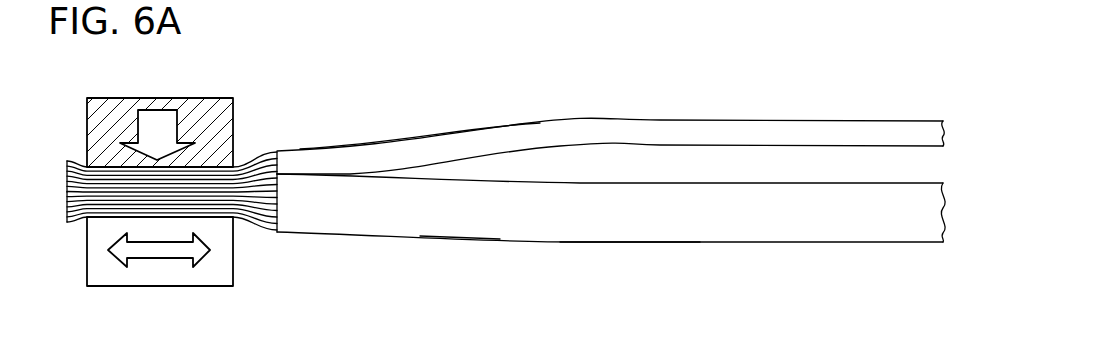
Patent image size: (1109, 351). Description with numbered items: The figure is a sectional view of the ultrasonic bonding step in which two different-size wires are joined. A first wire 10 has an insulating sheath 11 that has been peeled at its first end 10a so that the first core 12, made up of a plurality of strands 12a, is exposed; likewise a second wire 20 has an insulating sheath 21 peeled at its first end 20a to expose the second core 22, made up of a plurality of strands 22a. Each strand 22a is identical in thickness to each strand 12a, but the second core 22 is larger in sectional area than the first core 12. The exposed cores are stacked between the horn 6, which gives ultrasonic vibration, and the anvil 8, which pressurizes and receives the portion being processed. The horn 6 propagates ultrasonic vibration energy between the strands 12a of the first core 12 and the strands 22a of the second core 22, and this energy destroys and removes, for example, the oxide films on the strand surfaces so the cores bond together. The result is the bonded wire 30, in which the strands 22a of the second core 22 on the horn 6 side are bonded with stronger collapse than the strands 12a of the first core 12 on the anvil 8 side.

The horn 6 is at (210, 287).
The anvil 8 is at (212, 103).
The first wire 10 is at (610, 110).
The first end of the first wire 10a is at (278, 150).
The insulating sheath of the first wire 11 is at (627, 123).
The first core 12 is at (266, 153).
The strands of the first core 12a is at (82, 165).
The second wire 20 is at (611, 254).
The first end of the second wire 20a is at (298, 233).
The insulating sheath of the second wire 21 is at (641, 242).
The second core 22 is at (248, 226).
The strands of the second core 22a is at (83, 223).
The bonded wire 30 is at (462, 240).